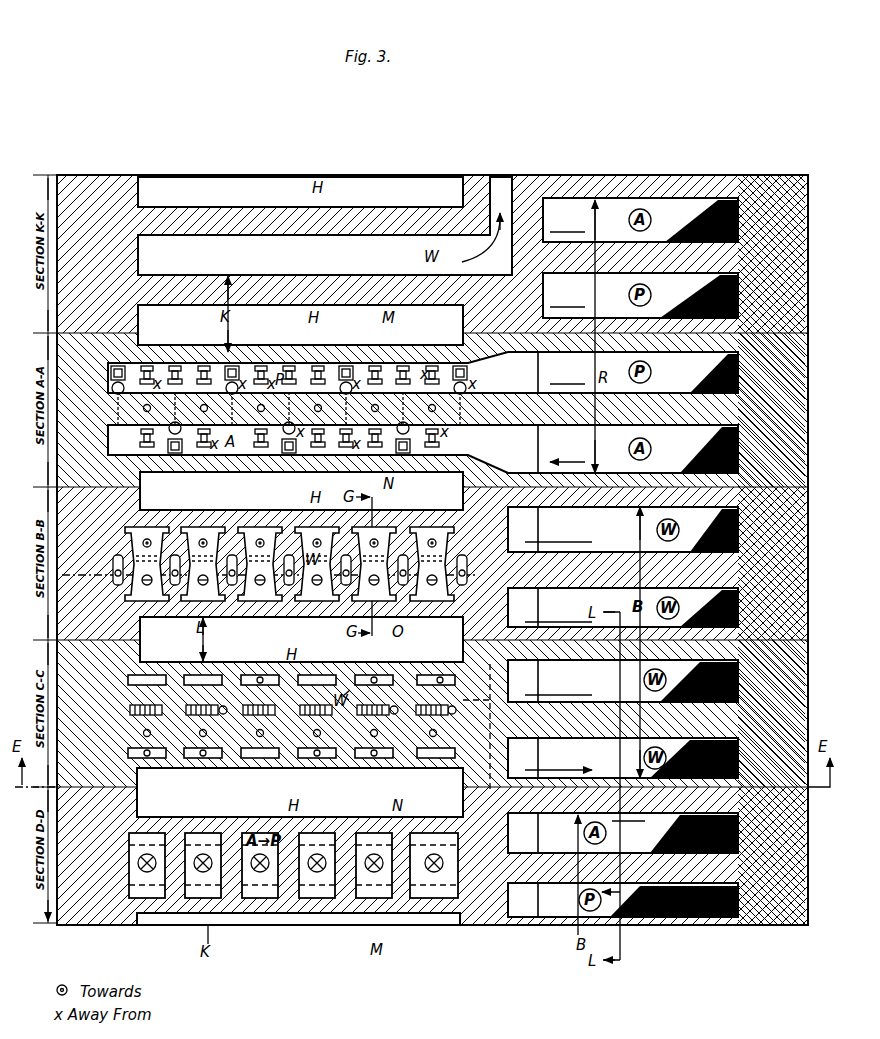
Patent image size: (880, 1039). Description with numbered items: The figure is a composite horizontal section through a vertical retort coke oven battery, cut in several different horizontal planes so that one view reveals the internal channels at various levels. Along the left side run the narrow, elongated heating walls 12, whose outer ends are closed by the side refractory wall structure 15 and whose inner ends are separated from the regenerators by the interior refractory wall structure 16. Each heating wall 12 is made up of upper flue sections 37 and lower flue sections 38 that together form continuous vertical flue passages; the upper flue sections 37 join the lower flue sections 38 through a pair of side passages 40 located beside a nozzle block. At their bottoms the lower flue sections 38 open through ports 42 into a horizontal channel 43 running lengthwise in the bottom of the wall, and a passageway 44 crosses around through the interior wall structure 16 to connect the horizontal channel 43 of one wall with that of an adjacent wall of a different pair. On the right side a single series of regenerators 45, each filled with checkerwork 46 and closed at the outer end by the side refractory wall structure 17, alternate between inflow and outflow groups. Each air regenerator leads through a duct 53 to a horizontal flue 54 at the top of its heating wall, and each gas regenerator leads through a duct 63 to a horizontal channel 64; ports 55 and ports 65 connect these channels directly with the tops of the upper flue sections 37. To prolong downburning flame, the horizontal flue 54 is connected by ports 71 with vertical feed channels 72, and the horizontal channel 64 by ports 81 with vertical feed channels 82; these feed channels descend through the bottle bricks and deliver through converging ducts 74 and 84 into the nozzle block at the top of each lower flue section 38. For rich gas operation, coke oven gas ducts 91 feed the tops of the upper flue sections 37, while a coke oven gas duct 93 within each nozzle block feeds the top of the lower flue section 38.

The heating wall 12 is at (424, 603).
The side refractory wall structure 15 is at (92, 925).
The interior refractory wall structure 16 is at (478, 918).
The side refractory wall structure 17 is at (770, 205).
The upper flue section 37 is at (200, 548).
The lower flue section 38 is at (368, 888).
The passage 40 is at (320, 676).
The port 42 is at (433, 872).
The horizontal channel 43 is at (273, 250).
The passageway 44 is at (498, 200).
The regenerator 45 is at (585, 562).
The checkerwork 46 is at (717, 200).
The duct 53 is at (423, 449).
The horizontal flue 54 is at (320, 448).
The port 55 is at (200, 442).
The duct 63 is at (423, 372).
The horizontal channel 64 is at (176, 363).
The port 65 is at (262, 363).
The port 71 is at (178, 453).
The vertical feed channel 72 is at (432, 448).
The duct 74 is at (446, 705).
The port 81 is at (346, 366).
The vertical feed channel 82 is at (182, 590).
The duct 84 is at (420, 706).
The coke oven gas duct 91 is at (300, 296).
The coke oven gas duct 93 is at (203, 737).